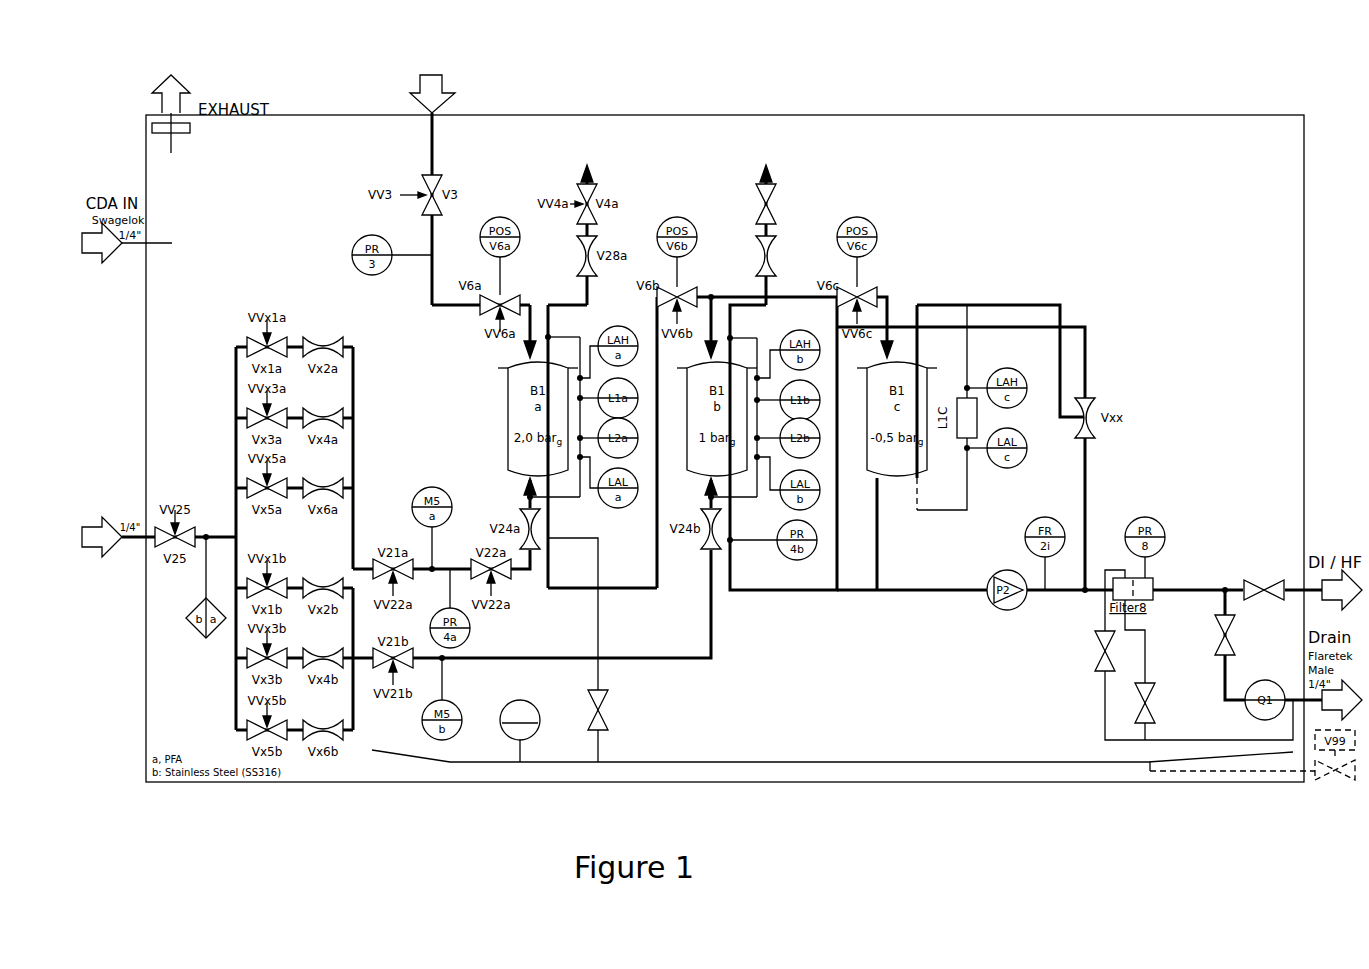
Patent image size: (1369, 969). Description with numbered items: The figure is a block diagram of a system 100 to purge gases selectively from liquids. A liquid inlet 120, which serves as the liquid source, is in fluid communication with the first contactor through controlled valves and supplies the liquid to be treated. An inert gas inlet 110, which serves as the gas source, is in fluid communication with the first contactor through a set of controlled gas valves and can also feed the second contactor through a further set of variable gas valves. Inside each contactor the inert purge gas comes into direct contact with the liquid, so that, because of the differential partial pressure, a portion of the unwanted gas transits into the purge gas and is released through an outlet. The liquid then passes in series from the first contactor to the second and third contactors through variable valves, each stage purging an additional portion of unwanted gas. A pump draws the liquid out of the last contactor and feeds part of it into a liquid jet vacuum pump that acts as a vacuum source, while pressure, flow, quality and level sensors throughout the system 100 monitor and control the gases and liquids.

The system 100 is at (1137, 93).
The inert gas inlet 110 is at (101, 519).
The liquid inlet 120 is at (408, 94).